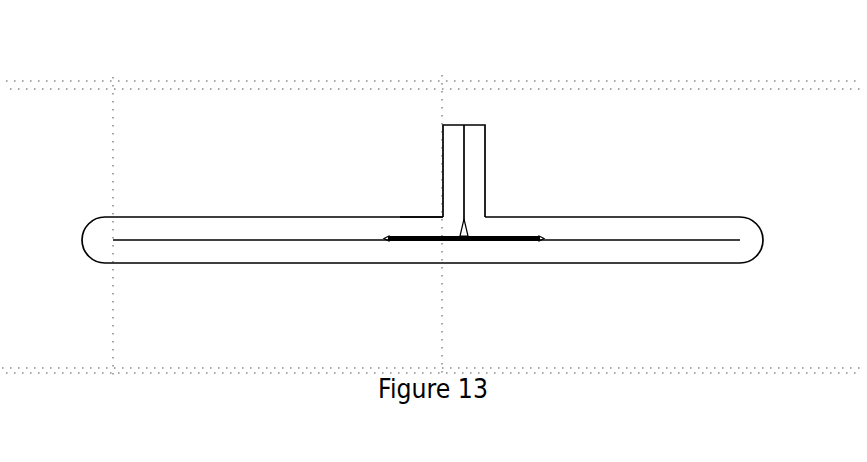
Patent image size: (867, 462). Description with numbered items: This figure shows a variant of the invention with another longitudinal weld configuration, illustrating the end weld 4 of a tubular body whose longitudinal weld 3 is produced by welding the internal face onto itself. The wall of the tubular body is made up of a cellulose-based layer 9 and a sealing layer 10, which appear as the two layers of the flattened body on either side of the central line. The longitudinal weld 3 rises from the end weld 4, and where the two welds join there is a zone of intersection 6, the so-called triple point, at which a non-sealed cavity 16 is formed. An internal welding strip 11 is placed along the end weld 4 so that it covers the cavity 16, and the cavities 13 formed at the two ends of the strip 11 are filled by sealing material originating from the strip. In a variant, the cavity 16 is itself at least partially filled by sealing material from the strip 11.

The end weld 4 is at (209, 184).
The longitudinal weld 3 is at (412, 217).
The zone of intersection of the longitudinal weld and of the end weld 6 is at (428, 184).
The cellulose-based layer of the tubular body 9 is at (660, 228).
The sealing layer of the tubular body 10 is at (676, 242).
The internal welding strip 11 is at (428, 242).
The cavities 13 is at (388, 242).
The non-sealed cavity 16 is at (466, 242).